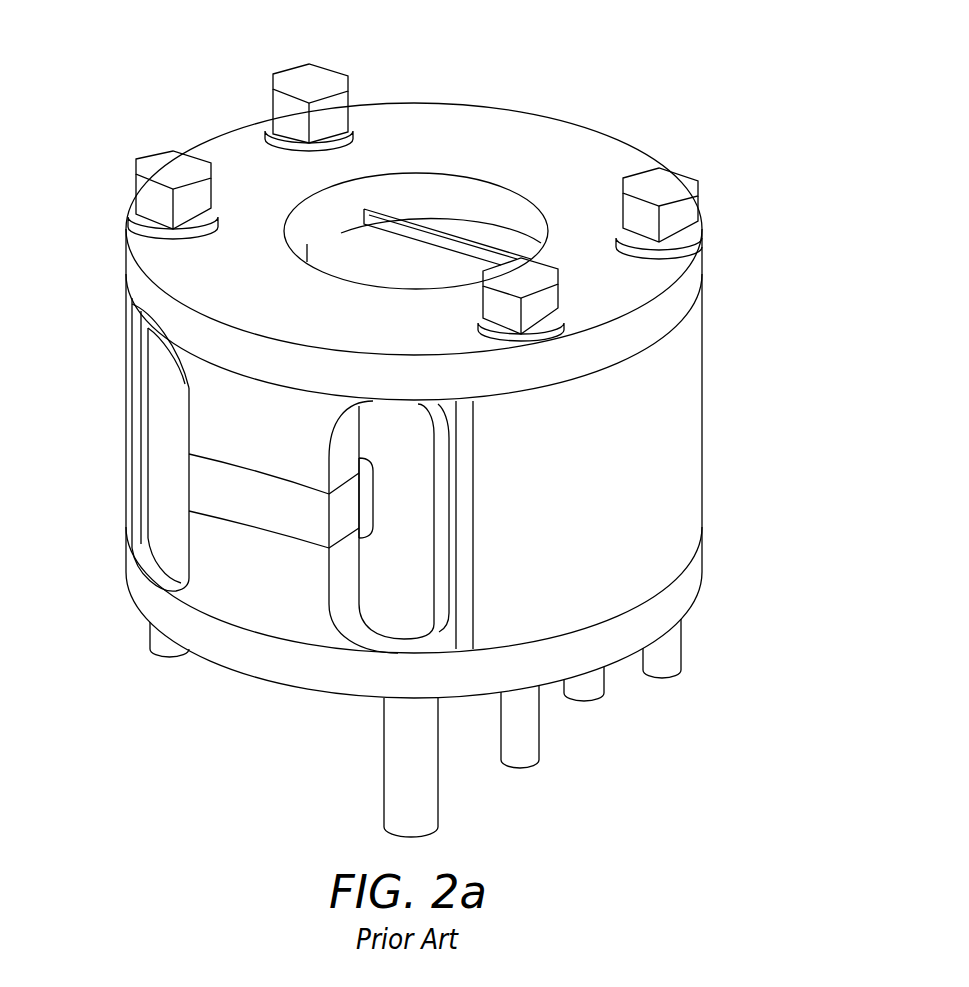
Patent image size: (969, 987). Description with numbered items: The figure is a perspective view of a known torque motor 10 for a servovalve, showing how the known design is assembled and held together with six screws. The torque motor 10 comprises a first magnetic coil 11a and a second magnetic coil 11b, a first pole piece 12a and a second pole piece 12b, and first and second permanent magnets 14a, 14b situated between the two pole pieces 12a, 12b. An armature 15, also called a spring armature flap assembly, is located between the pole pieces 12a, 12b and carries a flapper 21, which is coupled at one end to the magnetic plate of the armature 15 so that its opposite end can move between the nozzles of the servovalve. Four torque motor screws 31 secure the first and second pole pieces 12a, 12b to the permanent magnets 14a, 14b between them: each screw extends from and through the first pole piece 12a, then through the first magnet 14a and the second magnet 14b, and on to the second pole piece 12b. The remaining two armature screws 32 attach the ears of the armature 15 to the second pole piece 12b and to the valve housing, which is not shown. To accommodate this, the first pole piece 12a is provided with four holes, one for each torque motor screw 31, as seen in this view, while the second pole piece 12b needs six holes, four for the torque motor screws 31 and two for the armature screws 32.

The torque motor 10 is at (648, 72).
The first magnetic coil 11a is at (158, 411).
The second magnetic coil 11b is at (490, 227).
The first pole piece 12a is at (500, 118).
The second pole piece 12b is at (257, 665).
The first permanent magnet 14a is at (128, 337).
The second permanent magnet 14b is at (692, 429).
The armature 15 is at (253, 490).
The flapper 21 is at (393, 775).
The torque motor screw 31 is at (295, 74).
The armature screw 32 is at (590, 692).